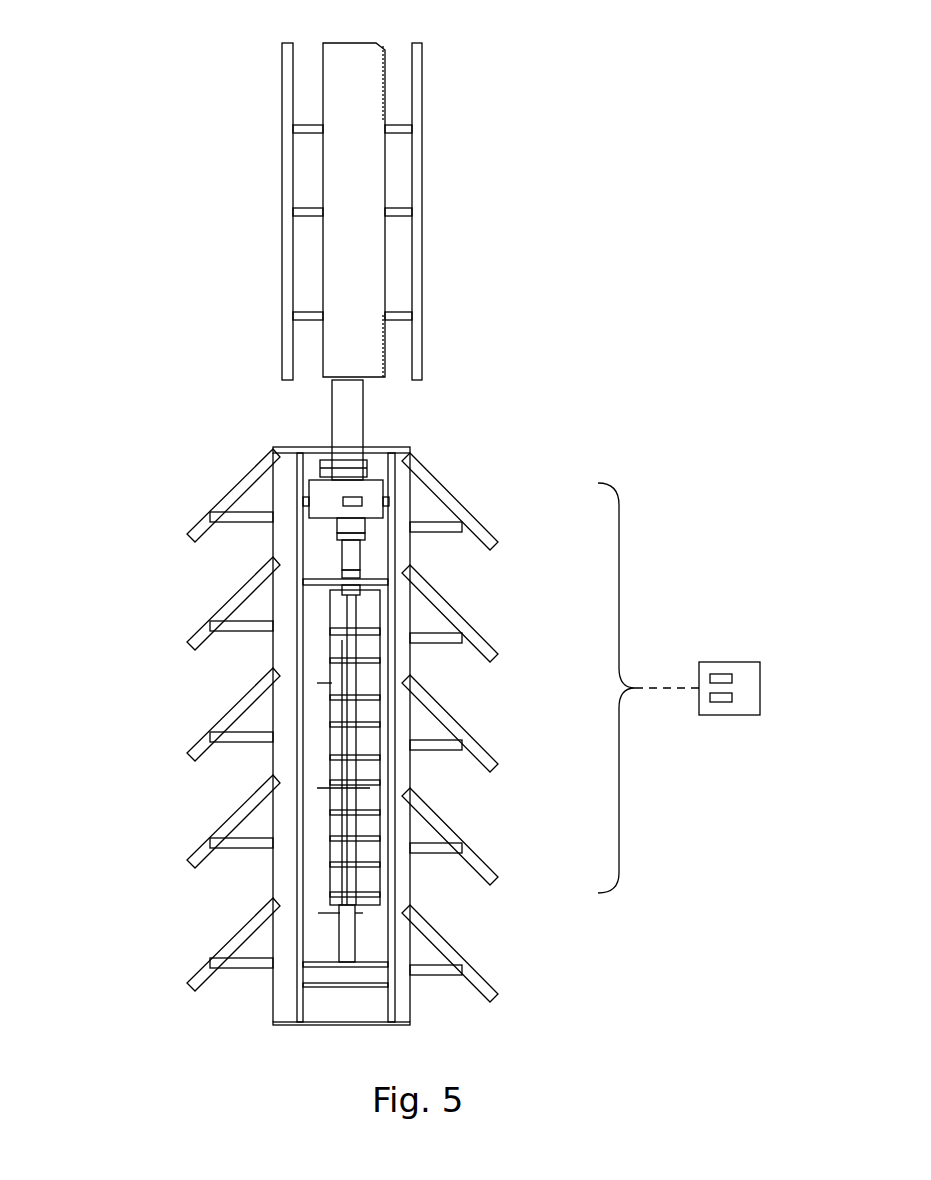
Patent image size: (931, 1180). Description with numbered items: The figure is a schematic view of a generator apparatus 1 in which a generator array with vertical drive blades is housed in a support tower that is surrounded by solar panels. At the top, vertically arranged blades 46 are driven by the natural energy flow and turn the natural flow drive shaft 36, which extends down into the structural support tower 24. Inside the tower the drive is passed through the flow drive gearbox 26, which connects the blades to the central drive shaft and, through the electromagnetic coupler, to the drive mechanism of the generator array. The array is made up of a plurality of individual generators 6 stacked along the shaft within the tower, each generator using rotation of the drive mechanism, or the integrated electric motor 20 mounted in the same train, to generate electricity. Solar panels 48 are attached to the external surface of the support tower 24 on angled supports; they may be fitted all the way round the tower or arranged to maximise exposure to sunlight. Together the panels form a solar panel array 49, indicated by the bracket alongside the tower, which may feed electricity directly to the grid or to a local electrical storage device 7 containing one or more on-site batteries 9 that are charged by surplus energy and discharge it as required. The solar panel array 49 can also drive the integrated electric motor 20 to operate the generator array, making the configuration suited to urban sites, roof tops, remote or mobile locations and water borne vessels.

The generator apparatus 1 is at (228, 88).
The blades 46 is at (422, 145).
The natural flow drive shaft 36 is at (353, 418).
The flow drive gearbox 26 is at (373, 488).
The support tower 24 is at (272, 653).
The solar panels 48 is at (208, 515).
The integrated electric motor 20 is at (370, 868).
The individual generators 6 is at (363, 633).
The solar panel array 49 is at (649, 688).
The electrical storage device 7 is at (747, 656).
The batteries 9 is at (727, 678).